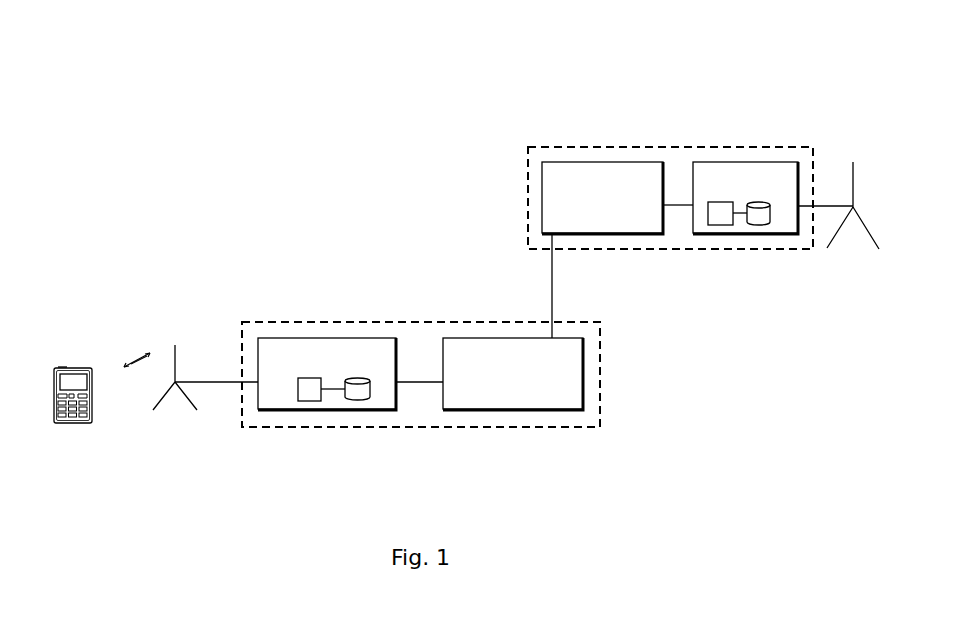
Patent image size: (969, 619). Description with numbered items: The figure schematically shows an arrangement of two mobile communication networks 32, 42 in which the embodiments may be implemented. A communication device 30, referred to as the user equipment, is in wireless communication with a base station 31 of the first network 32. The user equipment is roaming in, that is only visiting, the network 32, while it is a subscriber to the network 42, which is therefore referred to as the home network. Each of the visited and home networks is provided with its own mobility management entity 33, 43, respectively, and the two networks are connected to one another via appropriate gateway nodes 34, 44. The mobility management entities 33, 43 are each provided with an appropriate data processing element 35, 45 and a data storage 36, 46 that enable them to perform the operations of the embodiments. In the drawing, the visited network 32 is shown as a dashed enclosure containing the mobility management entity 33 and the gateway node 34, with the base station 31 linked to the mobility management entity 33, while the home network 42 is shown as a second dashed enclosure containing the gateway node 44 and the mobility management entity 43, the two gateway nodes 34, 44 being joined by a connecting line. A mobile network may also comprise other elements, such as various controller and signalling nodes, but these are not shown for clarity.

The communication device 30 is at (72, 425).
The base station 31 is at (165, 410).
The mobile communication network 32 is at (257, 427).
The mobility management entity 33 is at (352, 410).
The gateway node 34 is at (487, 410).
The data processing element 35 is at (310, 391).
The data storage 36 is at (345, 392).
The mobile communication network 42 is at (637, 150).
The mobility management entity 43 is at (707, 162).
The gateway node 44 is at (557, 162).
The data processing element 45 is at (725, 212).
The data storage 46 is at (757, 225).